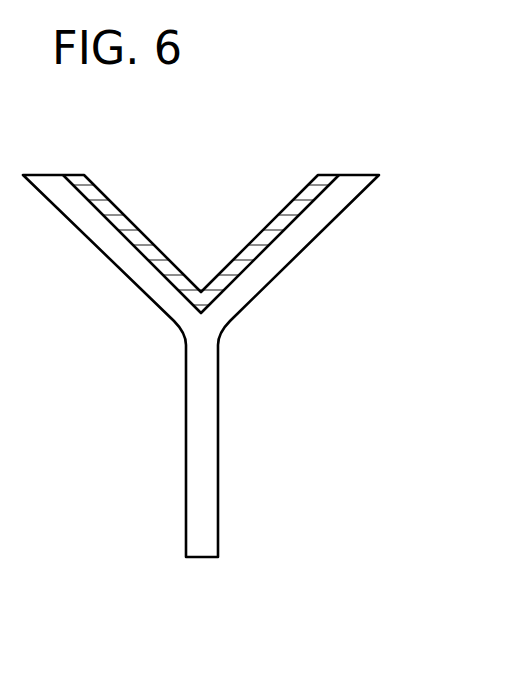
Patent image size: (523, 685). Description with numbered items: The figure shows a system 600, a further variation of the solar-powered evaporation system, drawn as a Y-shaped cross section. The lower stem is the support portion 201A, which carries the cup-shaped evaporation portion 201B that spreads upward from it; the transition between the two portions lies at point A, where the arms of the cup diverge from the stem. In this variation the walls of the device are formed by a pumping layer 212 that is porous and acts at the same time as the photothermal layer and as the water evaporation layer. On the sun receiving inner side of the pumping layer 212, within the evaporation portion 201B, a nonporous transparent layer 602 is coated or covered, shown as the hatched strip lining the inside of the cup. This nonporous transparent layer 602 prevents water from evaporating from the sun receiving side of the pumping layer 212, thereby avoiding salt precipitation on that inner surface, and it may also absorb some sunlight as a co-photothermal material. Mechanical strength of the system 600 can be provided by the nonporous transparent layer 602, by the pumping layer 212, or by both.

The system 600 is at (213, 126).
The nonporous transparent layer 602 is at (327, 173).
The pumping layer 212 is at (370, 174).
The support portion 201A is at (243, 487).
The evaporation portion 201B is at (351, 231).
The point A is at (229, 339).